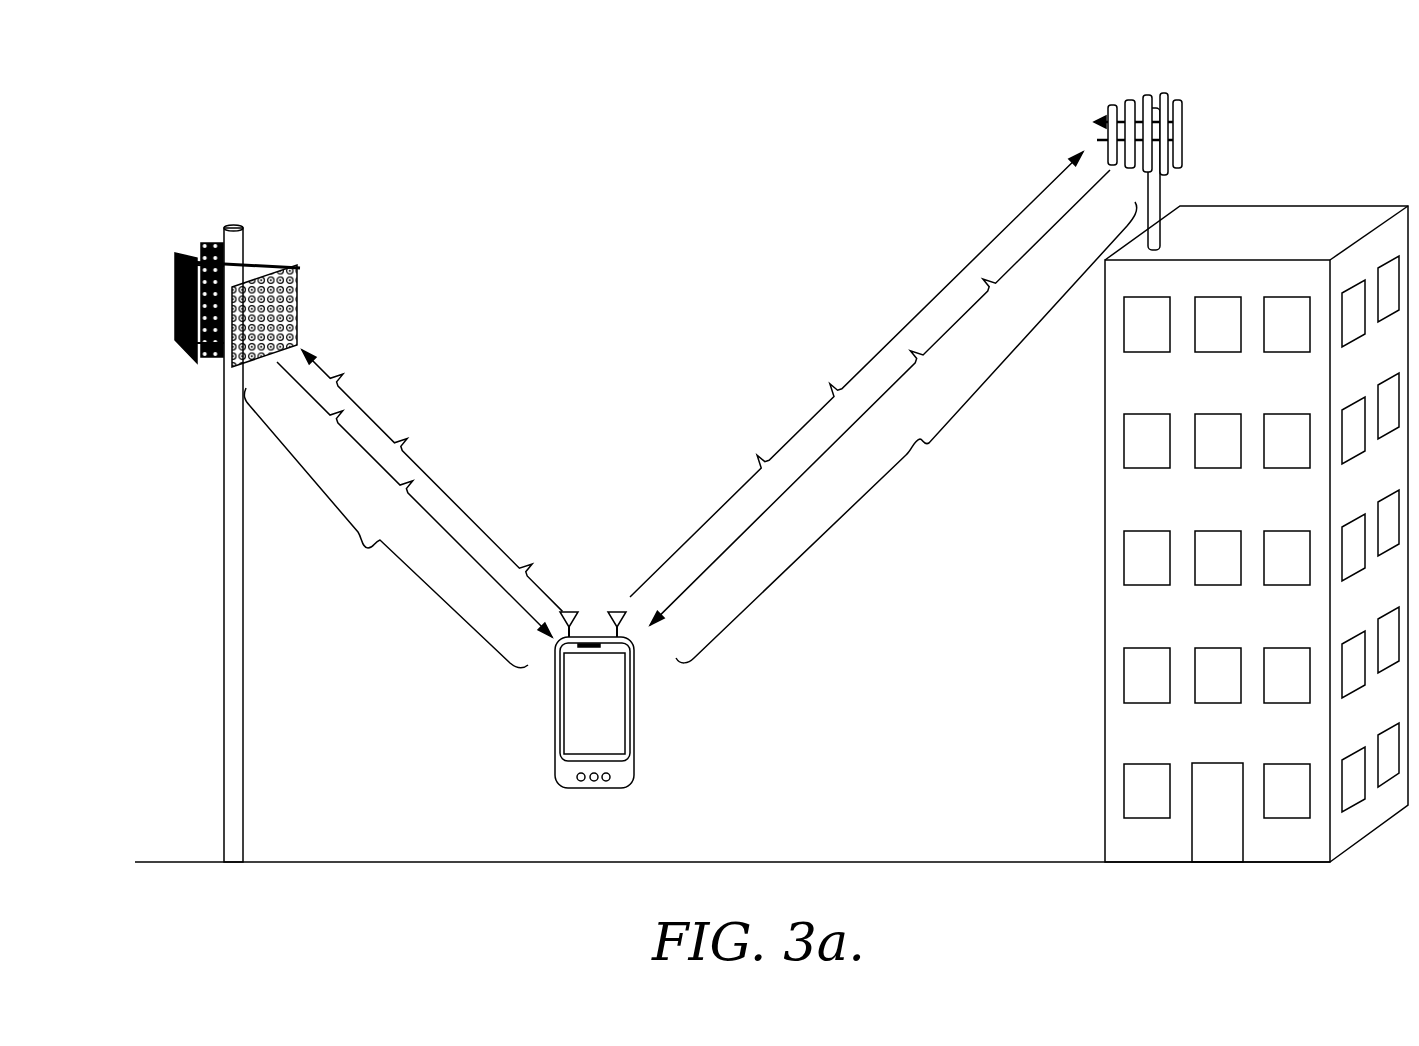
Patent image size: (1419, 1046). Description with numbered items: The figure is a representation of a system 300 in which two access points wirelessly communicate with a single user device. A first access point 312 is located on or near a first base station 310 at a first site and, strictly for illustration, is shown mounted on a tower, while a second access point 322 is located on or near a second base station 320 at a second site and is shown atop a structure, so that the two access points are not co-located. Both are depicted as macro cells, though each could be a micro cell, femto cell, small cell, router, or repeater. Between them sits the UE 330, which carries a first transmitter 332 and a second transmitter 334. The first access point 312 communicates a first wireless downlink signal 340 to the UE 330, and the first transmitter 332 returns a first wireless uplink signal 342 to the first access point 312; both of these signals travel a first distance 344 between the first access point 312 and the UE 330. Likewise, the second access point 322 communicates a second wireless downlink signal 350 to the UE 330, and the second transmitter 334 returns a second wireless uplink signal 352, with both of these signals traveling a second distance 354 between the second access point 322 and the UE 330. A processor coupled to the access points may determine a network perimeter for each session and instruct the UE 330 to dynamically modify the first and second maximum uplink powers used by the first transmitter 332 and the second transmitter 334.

The system 300 is at (358, 81).
The first base station 310 is at (165, 521).
The first access point 312 is at (299, 273).
The second base station 320 is at (1240, 175).
The second access point 322 is at (1162, 93).
The UE 330 is at (558, 718).
The first transmitter 332 is at (570, 612).
The second transmitter 334 is at (617, 612).
The first wireless downlink signal 340 is at (452, 532).
The first wireless uplink signal 342 is at (410, 456).
The first distance 344 is at (366, 548).
The second wireless downlink signal 350 is at (784, 492).
The second wireless uplink signal 352 is at (889, 343).
The second distance 354 is at (921, 447).